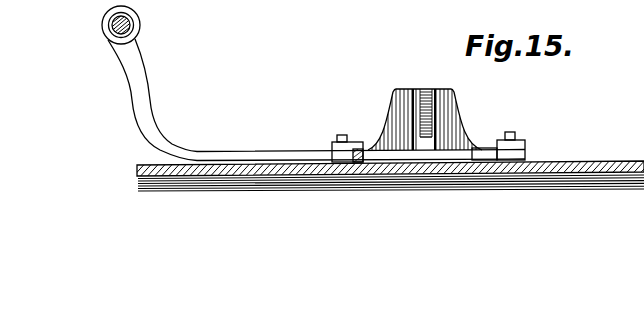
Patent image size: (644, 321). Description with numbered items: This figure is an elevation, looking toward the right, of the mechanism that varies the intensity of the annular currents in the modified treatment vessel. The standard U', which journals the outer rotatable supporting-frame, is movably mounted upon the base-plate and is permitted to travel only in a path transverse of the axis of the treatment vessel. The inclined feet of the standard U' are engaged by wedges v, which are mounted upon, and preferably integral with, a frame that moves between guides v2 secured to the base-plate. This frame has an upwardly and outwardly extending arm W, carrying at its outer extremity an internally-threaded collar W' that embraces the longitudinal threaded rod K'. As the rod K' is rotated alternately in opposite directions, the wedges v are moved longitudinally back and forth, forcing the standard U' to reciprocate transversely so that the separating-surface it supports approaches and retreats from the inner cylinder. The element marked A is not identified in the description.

The longitudinal threaded rod K' is at (95, 24).
The internally-threaded collar W' is at (142, 25).
The upwardly and outwardly extending arm W is at (316, 100).
The standard U' is at (425, 106).
The wedge v is at (356, 151).
The guide v2 is at (536, 141).
The base plate A is at (597, 163).